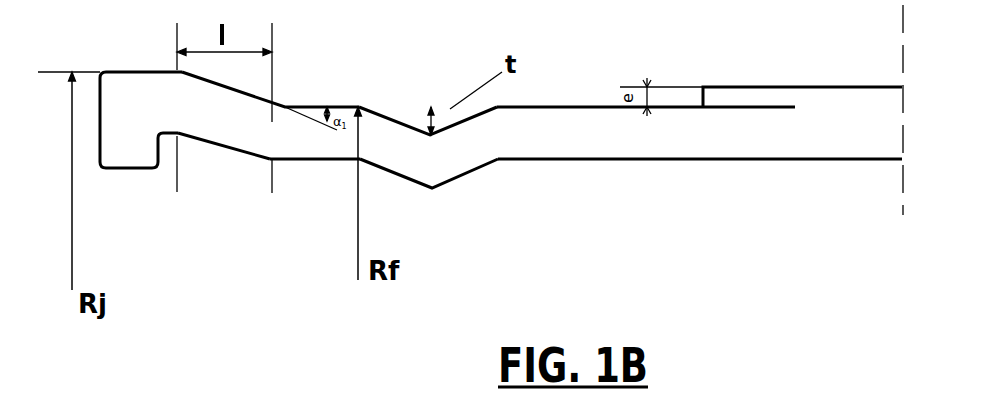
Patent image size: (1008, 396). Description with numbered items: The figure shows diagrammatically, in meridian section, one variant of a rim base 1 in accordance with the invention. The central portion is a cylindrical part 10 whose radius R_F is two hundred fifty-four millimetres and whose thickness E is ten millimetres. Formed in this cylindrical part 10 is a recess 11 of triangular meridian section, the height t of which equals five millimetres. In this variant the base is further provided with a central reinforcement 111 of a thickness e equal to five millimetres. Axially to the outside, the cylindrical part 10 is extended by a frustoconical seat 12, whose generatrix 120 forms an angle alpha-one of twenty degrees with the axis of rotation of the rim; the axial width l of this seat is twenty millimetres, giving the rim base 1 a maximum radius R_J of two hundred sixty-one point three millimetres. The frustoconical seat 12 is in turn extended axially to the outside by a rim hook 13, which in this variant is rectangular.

The rim base 1 is at (755, 133).
The cylindrical part 10 is at (615, 137).
The recess 11 is at (408, 115).
The frustoconical seat 12 is at (220, 122).
The rim hook 13 is at (127, 140).
The central reinforcement 111 is at (763, 100).
The generatrix 120 is at (257, 100).